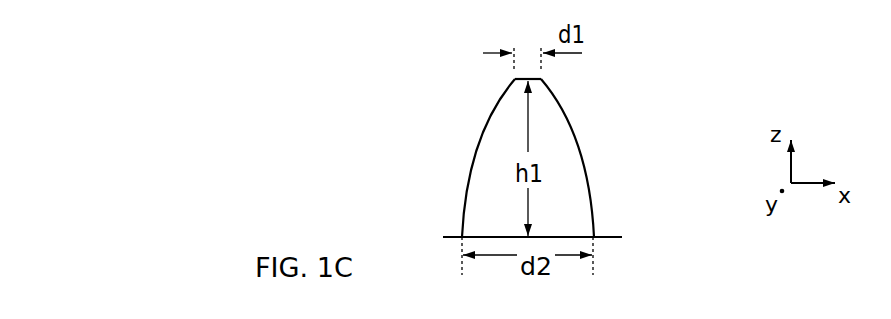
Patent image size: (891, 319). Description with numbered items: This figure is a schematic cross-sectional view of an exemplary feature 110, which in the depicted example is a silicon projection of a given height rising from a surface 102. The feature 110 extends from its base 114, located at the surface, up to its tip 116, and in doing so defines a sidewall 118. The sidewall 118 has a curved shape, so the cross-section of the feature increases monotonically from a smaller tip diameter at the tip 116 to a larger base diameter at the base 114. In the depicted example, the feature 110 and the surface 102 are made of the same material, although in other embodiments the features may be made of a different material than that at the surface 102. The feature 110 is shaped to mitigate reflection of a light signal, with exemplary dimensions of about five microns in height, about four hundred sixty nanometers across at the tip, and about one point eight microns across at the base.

The surface 102 is at (610, 236).
The feature 110 is at (443, 132).
The base 114 is at (487, 224).
The tip 116 is at (496, 78).
The sidewall 118 is at (577, 121).